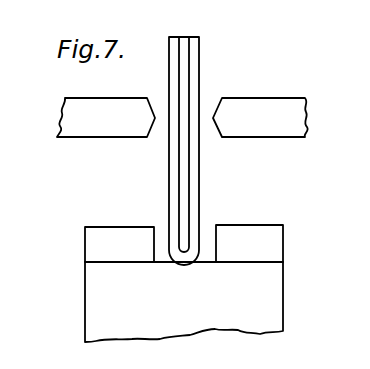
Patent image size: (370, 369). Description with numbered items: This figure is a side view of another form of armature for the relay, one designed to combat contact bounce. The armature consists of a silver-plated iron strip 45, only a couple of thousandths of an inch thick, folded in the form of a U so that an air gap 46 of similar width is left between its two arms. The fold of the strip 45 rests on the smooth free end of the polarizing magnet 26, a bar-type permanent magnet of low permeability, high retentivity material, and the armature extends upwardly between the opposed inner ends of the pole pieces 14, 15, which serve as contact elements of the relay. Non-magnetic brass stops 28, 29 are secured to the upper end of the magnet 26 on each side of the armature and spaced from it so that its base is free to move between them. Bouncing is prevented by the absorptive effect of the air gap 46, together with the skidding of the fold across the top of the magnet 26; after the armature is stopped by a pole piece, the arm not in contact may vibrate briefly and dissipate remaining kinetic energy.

The pole piece 14 is at (97, 114).
The pole piece 15 is at (275, 108).
The polarizing magnet 26 is at (95, 295).
The stop 28 is at (105, 226).
The stop 29 is at (270, 225).
The silver-plated iron strip 45 is at (200, 63).
The air gap 46 is at (184, 42).